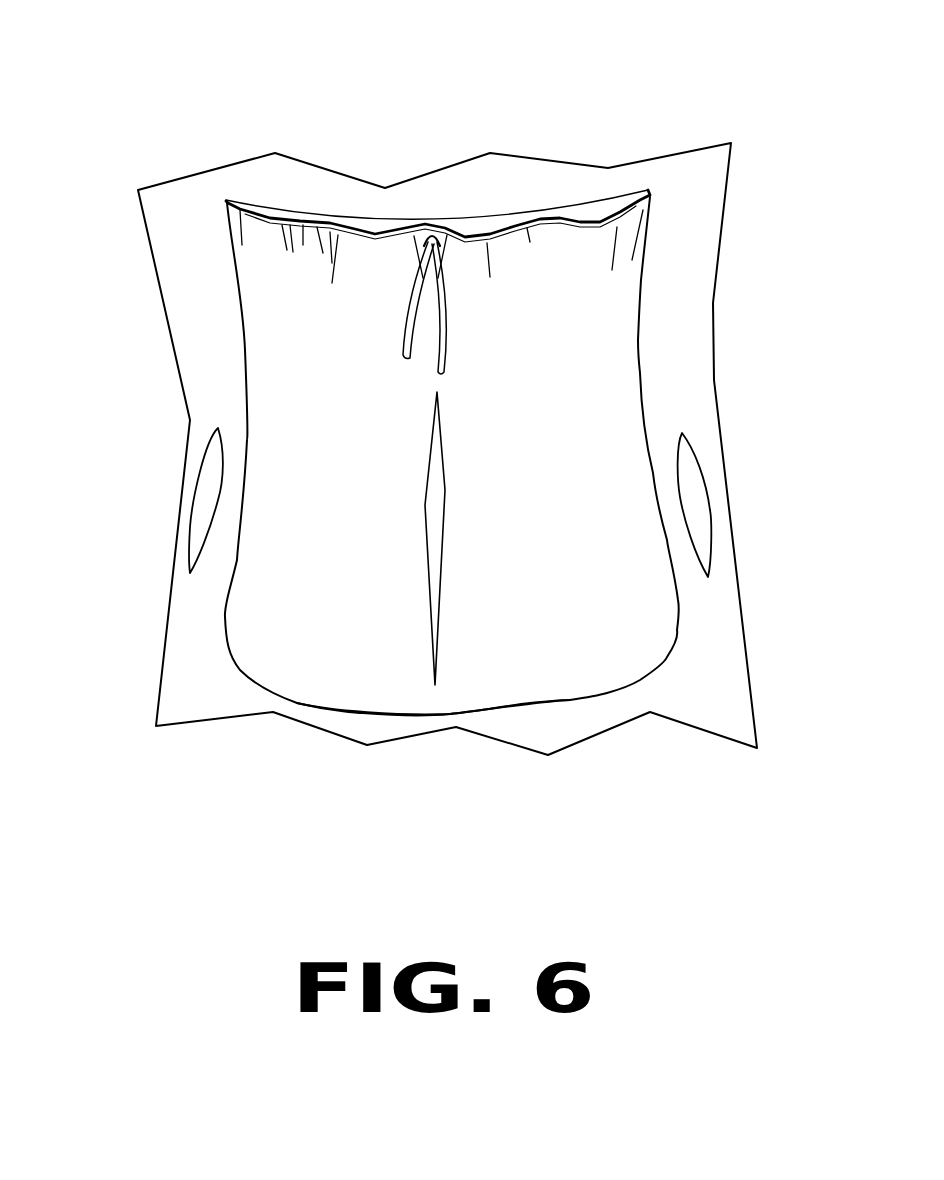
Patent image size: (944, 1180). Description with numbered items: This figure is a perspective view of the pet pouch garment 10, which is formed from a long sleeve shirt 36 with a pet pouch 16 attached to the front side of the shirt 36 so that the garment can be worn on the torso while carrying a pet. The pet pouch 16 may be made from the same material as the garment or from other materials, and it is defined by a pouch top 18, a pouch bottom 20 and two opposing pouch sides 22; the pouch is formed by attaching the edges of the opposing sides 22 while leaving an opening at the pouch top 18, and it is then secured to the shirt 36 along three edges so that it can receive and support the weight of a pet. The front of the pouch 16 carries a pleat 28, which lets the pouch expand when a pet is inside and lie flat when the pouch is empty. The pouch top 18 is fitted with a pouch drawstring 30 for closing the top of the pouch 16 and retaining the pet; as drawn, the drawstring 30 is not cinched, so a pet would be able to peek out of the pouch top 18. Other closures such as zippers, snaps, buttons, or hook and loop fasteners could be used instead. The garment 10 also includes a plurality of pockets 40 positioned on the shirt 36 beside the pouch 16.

The pet pouch garment 10 is at (133, 155).
The pet pouch 16 is at (452, 217).
The pouch top 18 is at (590, 223).
The pouch bottom 20 is at (573, 698).
The pouch sides 22 is at (638, 320).
The pleat 28 is at (433, 495).
The pouch drawstring 30 is at (412, 292).
The long sleeve shirt 36 is at (708, 403).
The pockets 40 is at (190, 496).